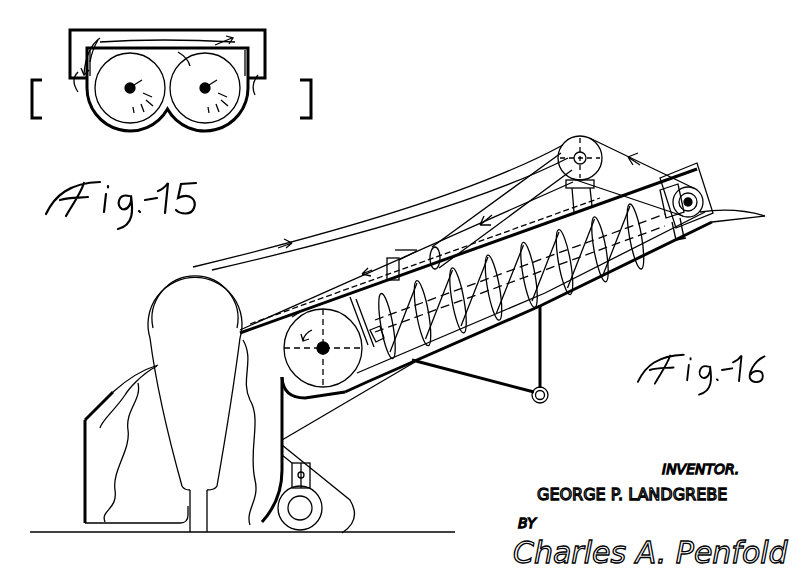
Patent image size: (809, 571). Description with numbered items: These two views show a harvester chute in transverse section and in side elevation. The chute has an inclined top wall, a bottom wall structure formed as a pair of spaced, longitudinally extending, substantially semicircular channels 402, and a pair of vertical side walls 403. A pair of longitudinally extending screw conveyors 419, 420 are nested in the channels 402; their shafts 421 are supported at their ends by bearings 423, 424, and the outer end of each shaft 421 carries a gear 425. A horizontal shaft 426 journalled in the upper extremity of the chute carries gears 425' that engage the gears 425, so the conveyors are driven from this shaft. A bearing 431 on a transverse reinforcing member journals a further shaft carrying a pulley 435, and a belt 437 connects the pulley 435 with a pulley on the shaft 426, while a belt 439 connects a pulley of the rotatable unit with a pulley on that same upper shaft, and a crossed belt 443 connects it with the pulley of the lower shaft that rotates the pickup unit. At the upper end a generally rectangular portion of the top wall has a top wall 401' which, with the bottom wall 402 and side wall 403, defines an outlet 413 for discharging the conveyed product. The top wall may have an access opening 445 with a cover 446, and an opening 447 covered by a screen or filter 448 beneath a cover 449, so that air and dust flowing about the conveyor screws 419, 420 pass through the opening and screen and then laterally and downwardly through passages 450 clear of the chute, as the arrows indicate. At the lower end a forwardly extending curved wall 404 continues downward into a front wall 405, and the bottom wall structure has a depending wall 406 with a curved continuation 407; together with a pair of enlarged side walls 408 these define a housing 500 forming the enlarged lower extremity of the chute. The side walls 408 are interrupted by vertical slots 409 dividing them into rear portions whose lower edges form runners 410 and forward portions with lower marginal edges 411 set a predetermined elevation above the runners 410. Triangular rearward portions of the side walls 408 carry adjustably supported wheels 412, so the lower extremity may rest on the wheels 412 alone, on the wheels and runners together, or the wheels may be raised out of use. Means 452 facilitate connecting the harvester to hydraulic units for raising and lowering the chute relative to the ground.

In FIG. 15, the top wall of rectangular portion 401' is at (161, 52).
In FIG. 16, the top wall of rectangular portion 401' is at (477, 235).
In FIG. 15, the semicircular channels 402 is at (132, 128).
In FIG. 16, the semicircular channels 402 is at (478, 334).
In FIG. 15, the vertical side walls 403 is at (262, 46).
In FIG. 16, the vertical side walls 403 is at (252, 357).
In FIG. 16, the curved wall 404 is at (96, 412).
In FIG. 16, the front wall 405 is at (85, 445).
In FIG. 16, the depending wall 406 is at (295, 432).
In FIG. 16, the curved continuation 407 is at (280, 520).
In FIG. 16, the enlarged side walls 408 is at (143, 370).
In FIG. 16, the vertical slots 409 is at (178, 527).
In FIG. 16, the runners 410 is at (248, 532).
In FIG. 16, the lower marginal edges 411 is at (117, 528).
In FIG. 16, the wheels 412 is at (320, 497).
In FIG. 16, the outlet 413 is at (702, 175).
In FIG. 15, the screw conveyor 419 is at (215, 110).
In FIG. 16, the screw conveyor 419 is at (600, 270).
In FIG. 15, the screw conveyor 420 is at (113, 110).
In FIG. 15, the shafts 421 is at (142, 83).
In FIG. 16, the shafts 421 is at (628, 258).
In FIG. 16, the bearing 423 is at (378, 340).
In FIG. 16, the bearing 424 is at (680, 238).
In FIG. 16, the gear 425 is at (710, 235).
In FIG. 16, the gears 425' is at (710, 197).
In FIG. 16, the horizontal shaft 426 is at (705, 202).
In FIG. 16, the bearing 431 is at (580, 152).
In FIG. 16, the pulley 435 is at (596, 148).
In FIG. 16, the belt 437 is at (625, 158).
In FIG. 16, the belt 439 is at (548, 155).
In FIG. 16, the crossed belt 443 is at (342, 236).
In FIG. 16, the access opening 445 is at (347, 277).
In FIG. 16, the cover 446 is at (323, 290).
In FIG. 15, the opening 447 is at (185, 50).
In FIG. 16, the opening 447 is at (434, 247).
In FIG. 15, the screen or filter 448 is at (170, 45).
In FIG. 16, the screen or filter 448 is at (417, 250).
In FIG. 16, the cover 449 is at (396, 257).
In FIG. 15, the passages 450 is at (72, 62).
In FIG. 16, the connection means 452 is at (549, 396).
In FIG. 16, the housing 500 is at (116, 388).